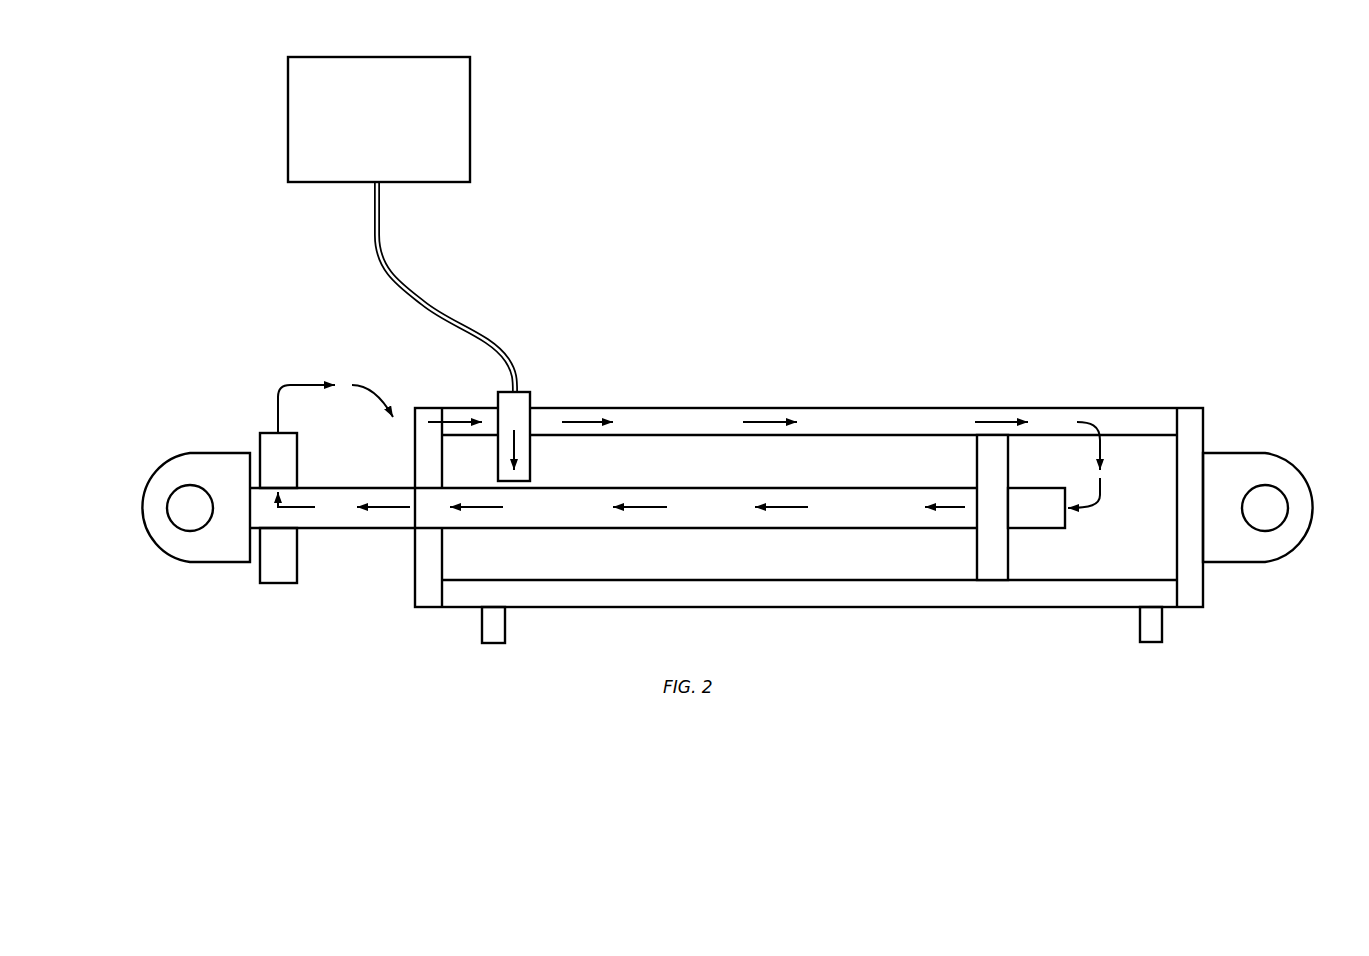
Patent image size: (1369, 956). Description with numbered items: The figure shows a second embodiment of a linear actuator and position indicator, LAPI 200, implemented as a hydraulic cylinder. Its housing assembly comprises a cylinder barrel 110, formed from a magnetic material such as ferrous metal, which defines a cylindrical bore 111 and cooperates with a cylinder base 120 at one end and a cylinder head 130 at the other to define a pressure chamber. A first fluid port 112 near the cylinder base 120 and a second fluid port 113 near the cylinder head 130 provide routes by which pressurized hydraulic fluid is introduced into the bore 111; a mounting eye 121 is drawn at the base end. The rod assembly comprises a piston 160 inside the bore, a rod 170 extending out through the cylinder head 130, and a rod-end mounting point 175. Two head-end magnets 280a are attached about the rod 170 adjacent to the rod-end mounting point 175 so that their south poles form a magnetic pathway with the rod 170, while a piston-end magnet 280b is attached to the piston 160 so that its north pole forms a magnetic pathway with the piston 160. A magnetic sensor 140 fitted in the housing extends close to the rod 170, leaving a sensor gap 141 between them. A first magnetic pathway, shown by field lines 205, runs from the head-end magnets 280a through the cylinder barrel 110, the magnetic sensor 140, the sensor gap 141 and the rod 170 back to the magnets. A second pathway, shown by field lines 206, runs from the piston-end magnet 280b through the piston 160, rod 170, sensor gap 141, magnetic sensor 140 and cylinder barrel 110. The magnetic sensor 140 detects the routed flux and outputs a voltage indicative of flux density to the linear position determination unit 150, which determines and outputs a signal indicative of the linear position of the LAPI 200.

The cylinder barrel 110 is at (817, 608).
The cylindrical bore 111 is at (717, 580).
The first fluid port 112 is at (1148, 645).
The second fluid port 113 is at (487, 645).
The cylinder base 120 is at (1192, 587).
The cap end mounting eye 121 is at (1280, 453).
The cylinder head 130 is at (428, 575).
The magnetic sensor 140 is at (520, 402).
The sensor gap 141 is at (527, 482).
The linear position determination unit 150 is at (360, 131).
The piston 160 is at (975, 553).
The rod 170 is at (793, 480).
The rod-end mounting point 175 is at (143, 543).
The LAPI 200 is at (1077, 130).
The field lines 205 is at (287, 387).
The field lines 206 is at (760, 416).
The head-end magnets 280a is at (299, 455).
The piston-end magnet 280b is at (1038, 529).